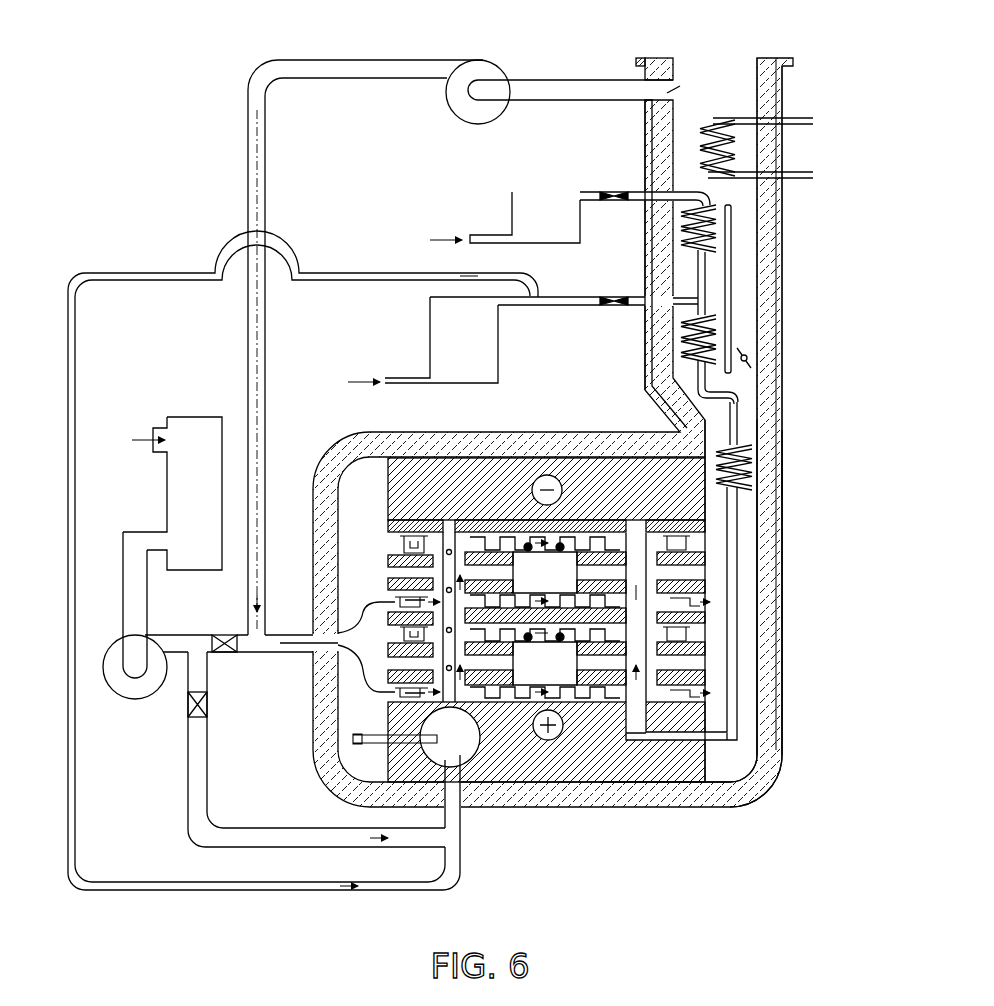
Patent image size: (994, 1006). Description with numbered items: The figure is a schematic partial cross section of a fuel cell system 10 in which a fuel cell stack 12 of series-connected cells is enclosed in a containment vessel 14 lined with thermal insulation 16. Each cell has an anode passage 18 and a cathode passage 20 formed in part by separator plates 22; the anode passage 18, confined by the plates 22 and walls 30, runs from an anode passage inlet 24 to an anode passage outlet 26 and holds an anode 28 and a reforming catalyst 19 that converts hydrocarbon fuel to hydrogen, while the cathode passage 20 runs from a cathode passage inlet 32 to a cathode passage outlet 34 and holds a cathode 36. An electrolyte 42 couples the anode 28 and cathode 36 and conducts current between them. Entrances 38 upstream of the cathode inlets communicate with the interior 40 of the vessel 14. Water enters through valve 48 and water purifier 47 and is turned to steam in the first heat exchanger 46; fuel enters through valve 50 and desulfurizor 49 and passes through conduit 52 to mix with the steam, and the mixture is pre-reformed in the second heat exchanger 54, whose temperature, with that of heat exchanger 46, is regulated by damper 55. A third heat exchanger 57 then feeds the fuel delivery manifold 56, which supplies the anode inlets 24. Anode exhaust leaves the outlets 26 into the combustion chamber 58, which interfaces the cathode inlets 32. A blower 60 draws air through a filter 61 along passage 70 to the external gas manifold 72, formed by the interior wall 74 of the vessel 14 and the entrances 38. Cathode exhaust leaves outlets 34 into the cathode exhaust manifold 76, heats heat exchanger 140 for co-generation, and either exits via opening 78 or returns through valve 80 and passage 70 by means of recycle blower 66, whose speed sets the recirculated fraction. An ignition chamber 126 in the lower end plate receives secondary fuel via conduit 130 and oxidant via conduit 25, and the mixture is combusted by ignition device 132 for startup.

The fuel cell system 10 is at (148, 120).
The fuel cell stack 12 is at (322, 510).
The fuel cell stack containment vessel 14 is at (786, 700).
The thermal insulation 16 is at (770, 745).
The anode passage 18 is at (500, 540).
The reforming catalyst 19 is at (520, 570).
The cathode passage 20 is at (590, 600).
The separator plates 22 is at (390, 530).
The anode passage inlet 24 is at (630, 542).
The conduit 25 is at (465, 815).
The anode passage outlet 26 is at (392, 457).
The anode 28 is at (575, 585).
The walls 30 is at (388, 551).
The cathode passage inlet 32 is at (362, 450).
The cathode passage outlet 34 is at (708, 600).
The cathode 36 is at (508, 555).
The entrances 38 is at (348, 635).
The interior of the vessel 40 is at (748, 512).
The electrolyte 42 is at (630, 530).
The first heat exchanger 46 is at (712, 225).
The water purifier 47 is at (540, 200).
The valve 48 is at (616, 193).
The desulfurizor 49 is at (430, 330).
The valve 50 is at (610, 297).
The conduit 52 is at (703, 310).
The second heat exchanger 54 is at (712, 330).
The damper 55 is at (748, 356).
The fuel delivery manifold 56 is at (642, 530).
The third heat exchanger 57 is at (750, 465).
The combustion chamber 58 is at (452, 455).
The blower 60 is at (150, 700).
The filter 61 is at (195, 416).
The recycle blower 66 is at (470, 62).
The passage 70 is at (590, 78).
The external gas manifold 72 is at (345, 610).
The interior wall 74 is at (738, 758).
The cathode exhaust manifold 76 is at (745, 520).
The opening 78 is at (745, 58).
The valve 80 is at (682, 88).
The ignition chamber 126 is at (425, 760).
The conduit 130 is at (136, 272).
The ignition device 132 is at (352, 740).
The heat exchanger 140 is at (748, 148).